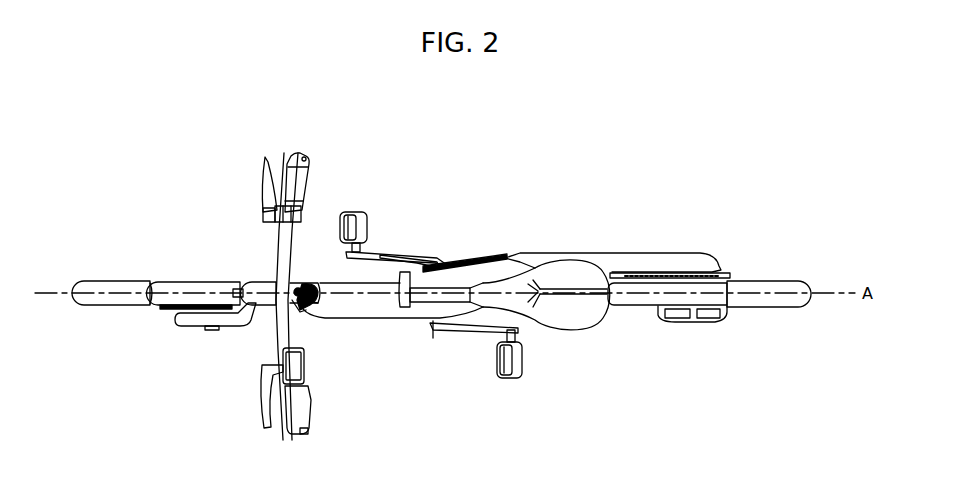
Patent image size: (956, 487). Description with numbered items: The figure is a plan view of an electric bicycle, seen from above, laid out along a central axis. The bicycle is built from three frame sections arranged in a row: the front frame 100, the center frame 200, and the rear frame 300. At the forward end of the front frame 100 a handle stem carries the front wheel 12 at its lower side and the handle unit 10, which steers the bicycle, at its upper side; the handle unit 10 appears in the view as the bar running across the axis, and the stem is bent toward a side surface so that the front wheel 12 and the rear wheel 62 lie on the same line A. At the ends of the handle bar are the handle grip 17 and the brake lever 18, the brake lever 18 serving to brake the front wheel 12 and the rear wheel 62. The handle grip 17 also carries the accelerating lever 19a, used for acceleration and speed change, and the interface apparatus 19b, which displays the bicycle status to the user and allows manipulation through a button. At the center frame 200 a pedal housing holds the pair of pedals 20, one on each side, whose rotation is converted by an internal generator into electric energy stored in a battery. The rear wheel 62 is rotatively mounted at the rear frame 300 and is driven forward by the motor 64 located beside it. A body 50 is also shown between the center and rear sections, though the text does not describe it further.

The handle unit 10 is at (252, 246).
The front wheel 12 is at (110, 282).
The handle grip 17 is at (310, 177).
The brake lever 18 is at (270, 180).
The accelerating lever 19a is at (302, 207).
The interface apparatus 19b is at (307, 368).
The pedals 20 is at (517, 380).
The frame body 50 is at (580, 317).
The rear wheel 62 is at (765, 305).
The motor 64 is at (690, 323).
The front frame 100 is at (393, 322).
The center frame 200 is at (450, 293).
The rear frame 300 is at (543, 265).